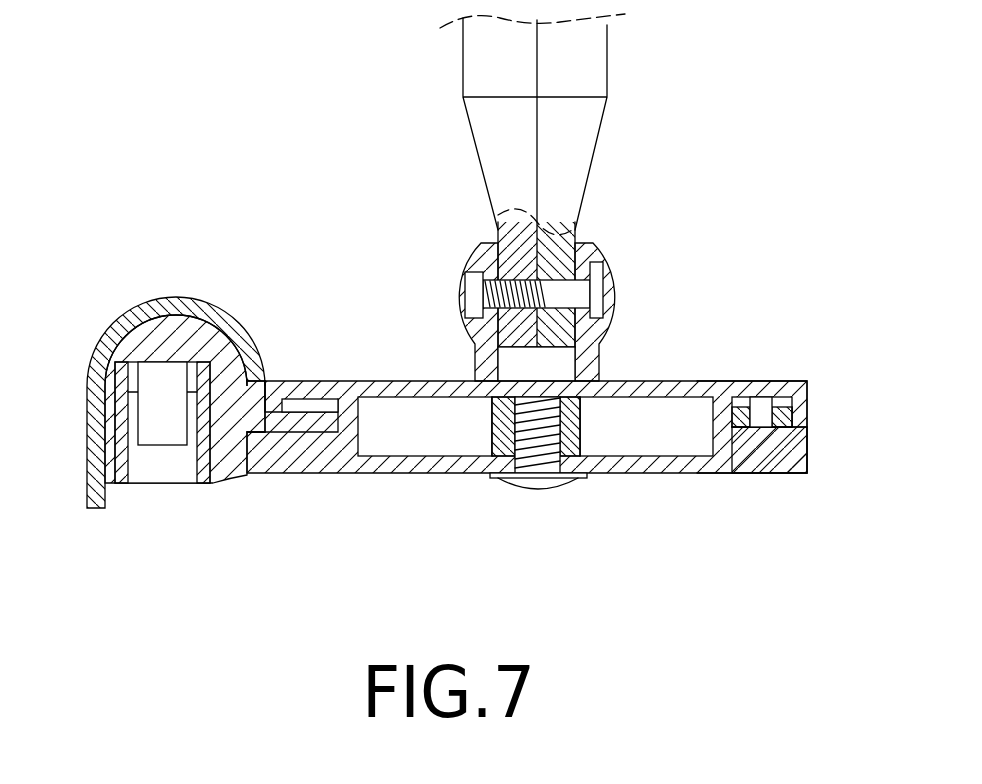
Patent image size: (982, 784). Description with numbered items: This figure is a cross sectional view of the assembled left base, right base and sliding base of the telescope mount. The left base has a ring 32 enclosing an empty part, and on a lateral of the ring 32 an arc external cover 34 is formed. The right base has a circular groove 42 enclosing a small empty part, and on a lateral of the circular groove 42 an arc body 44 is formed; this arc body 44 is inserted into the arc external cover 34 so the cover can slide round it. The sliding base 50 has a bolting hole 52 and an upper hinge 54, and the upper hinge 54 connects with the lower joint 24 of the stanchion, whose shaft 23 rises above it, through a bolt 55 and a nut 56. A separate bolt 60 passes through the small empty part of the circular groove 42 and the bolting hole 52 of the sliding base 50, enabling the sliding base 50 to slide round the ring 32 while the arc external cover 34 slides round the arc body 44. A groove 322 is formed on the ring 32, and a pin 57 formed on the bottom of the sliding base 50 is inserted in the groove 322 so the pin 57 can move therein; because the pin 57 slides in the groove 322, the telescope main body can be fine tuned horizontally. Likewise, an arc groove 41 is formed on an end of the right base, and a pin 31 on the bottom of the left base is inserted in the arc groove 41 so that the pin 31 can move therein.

The shaft 23 is at (587, 65).
The lower joint 24 is at (563, 233).
The upper hinge 54 is at (478, 252).
The bolt 55 is at (573, 297).
The nut 56 is at (470, 295).
The bolting hole 52 is at (583, 380).
The sliding base 50 is at (697, 381).
The pin 57 is at (757, 402).
The ring 32 is at (317, 400).
The groove 322 is at (775, 415).
The circular groove 42 is at (641, 458).
The bolt 60 is at (550, 463).
The arc body 44 is at (147, 345).
The arc external cover 34 is at (160, 305).
The arc groove 41 is at (167, 472).
The pin 31 is at (155, 387).